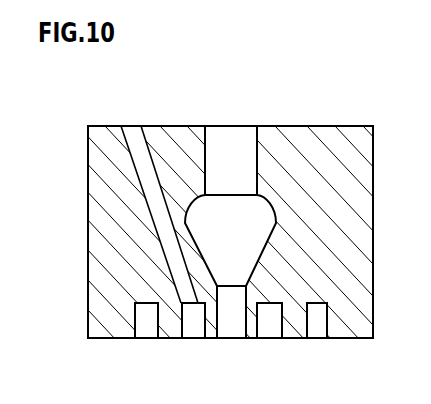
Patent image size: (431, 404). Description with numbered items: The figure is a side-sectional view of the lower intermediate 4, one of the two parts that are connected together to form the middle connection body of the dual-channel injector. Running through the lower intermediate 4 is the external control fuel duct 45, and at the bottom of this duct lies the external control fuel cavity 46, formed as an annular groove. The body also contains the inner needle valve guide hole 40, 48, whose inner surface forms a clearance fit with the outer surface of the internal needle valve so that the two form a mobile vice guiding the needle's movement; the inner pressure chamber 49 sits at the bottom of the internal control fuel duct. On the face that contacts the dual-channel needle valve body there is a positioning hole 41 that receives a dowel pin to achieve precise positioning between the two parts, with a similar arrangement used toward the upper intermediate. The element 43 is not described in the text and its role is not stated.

The lower intermediate 4 is at (215, 232).
The external control fuel duct 45 is at (122, 199).
The inner needle valve guide hole 48 is at (311, 160).
The inner pressure chamber 49 is at (301, 240).
The inner needle valve guide hole 40 is at (317, 294).
The positioning hole 41 is at (268, 328).
The external control fuel cavity 46 is at (252, 305).
The partition ribs 43 is at (254, 327).